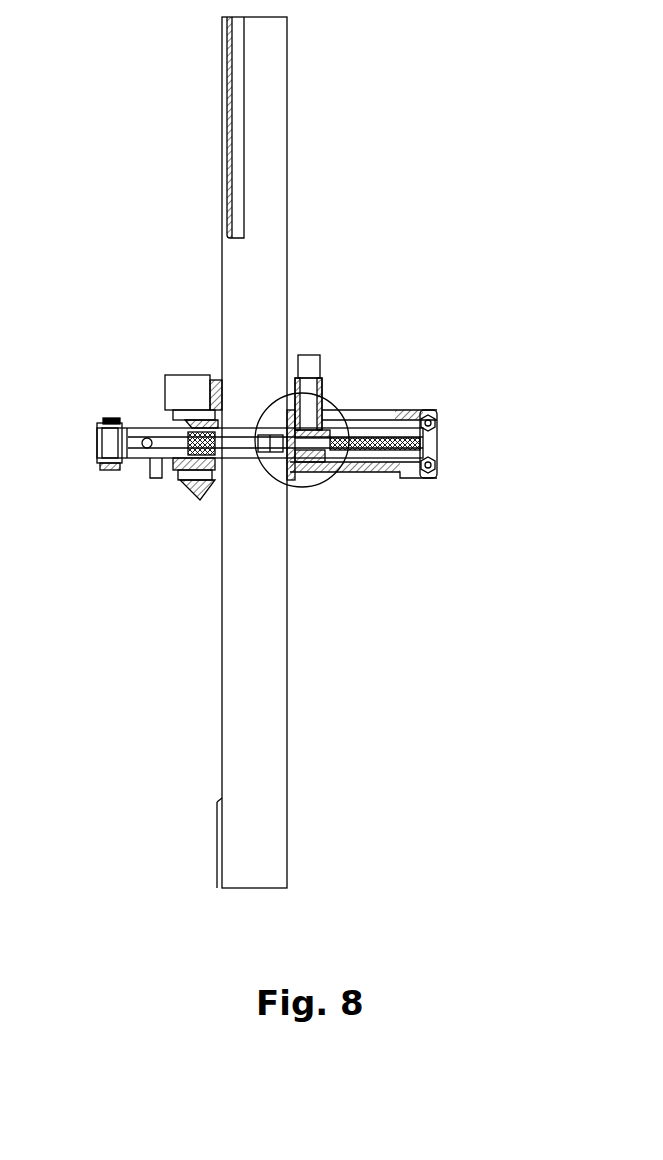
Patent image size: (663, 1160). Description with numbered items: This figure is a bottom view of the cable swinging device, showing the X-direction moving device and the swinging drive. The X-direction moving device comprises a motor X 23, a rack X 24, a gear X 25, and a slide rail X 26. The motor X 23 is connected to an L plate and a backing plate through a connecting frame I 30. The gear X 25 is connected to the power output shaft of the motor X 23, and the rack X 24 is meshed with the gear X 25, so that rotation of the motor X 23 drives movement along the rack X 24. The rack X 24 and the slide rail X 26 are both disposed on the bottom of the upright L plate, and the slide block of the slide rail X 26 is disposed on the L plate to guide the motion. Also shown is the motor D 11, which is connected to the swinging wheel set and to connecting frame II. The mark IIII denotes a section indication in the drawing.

The motor D 11 is at (223, 509).
The motor X 23 is at (347, 339).
The rack X 24 is at (423, 401).
The gear X 25 is at (402, 498).
The slide rail X 26 is at (373, 544).
The connecting frame I 30 is at (226, 347).
The section indicator IIII is at (378, 357).